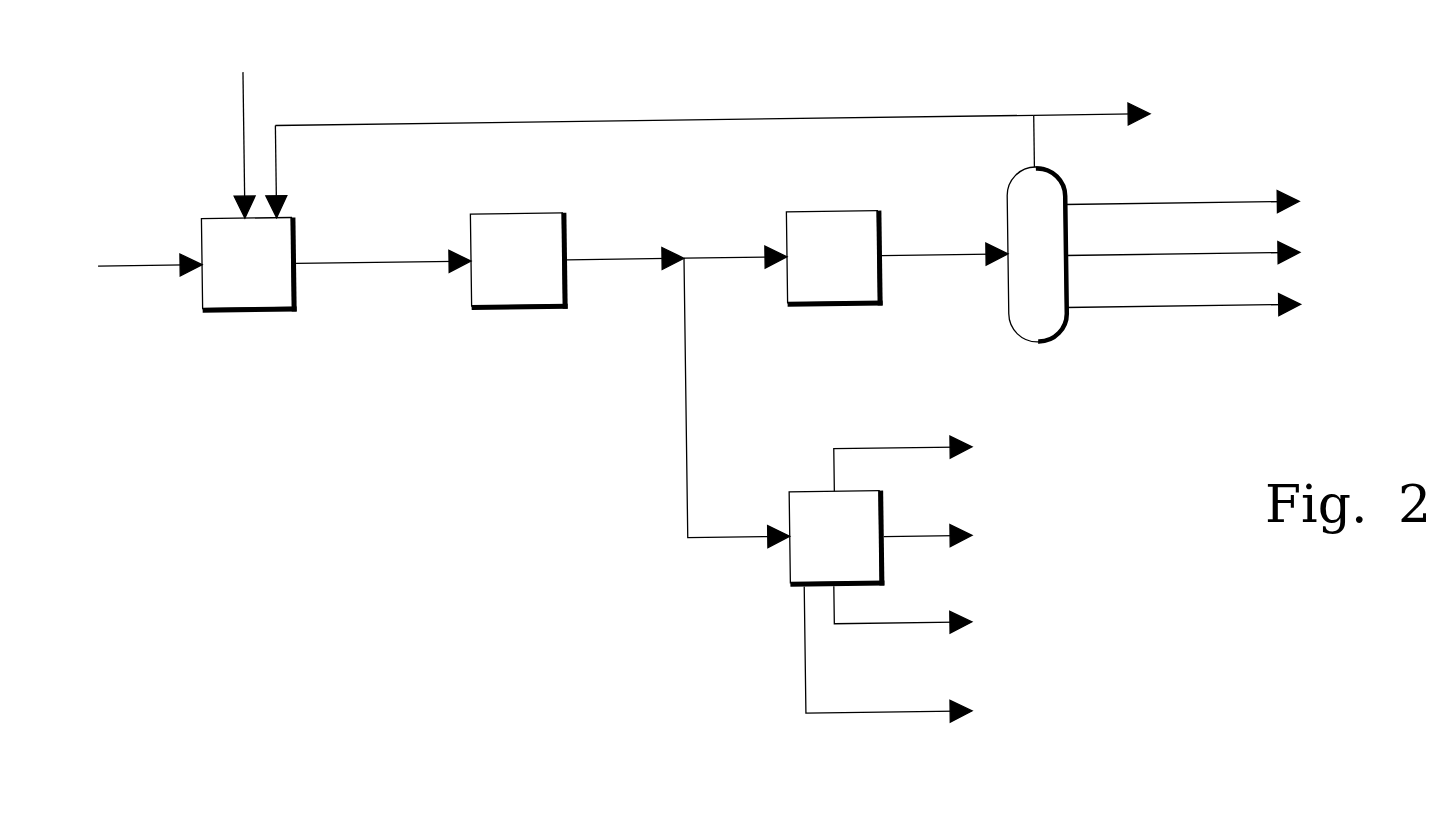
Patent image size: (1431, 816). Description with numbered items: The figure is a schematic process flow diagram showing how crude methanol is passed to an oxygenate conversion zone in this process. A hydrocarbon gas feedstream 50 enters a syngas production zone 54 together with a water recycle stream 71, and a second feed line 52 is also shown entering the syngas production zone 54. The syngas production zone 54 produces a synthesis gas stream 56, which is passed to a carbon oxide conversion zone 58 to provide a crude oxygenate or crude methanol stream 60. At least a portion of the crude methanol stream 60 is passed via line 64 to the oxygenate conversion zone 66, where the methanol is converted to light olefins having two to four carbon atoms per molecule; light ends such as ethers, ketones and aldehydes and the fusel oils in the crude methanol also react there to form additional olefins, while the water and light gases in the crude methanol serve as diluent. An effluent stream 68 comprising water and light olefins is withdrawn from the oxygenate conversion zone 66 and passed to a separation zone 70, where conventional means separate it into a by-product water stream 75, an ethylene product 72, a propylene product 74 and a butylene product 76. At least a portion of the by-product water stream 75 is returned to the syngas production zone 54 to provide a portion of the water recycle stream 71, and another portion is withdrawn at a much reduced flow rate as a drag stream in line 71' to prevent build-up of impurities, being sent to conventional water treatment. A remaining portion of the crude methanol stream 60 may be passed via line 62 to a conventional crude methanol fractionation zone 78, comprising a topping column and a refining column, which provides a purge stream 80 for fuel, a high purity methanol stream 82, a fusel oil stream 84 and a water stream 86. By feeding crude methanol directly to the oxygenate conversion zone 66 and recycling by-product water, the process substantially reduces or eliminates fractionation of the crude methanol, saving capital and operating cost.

The hydrocarbon gas feedstream 50 is at (148, 260).
The additive stream 52 is at (247, 103).
The syngas production zone 54 is at (265, 304).
The synthesis gas stream 56 is at (371, 260).
The carbon oxide conversion zone 58 is at (533, 305).
The crude methanol stream 60 is at (619, 259).
The line 62 is at (684, 396).
The line 64 is at (738, 257).
The oxygenate conversion zone 66 is at (852, 306).
The effluent stream 68 is at (932, 257).
The separation zone 70 is at (1052, 343).
The water recycle stream 71 is at (649, 145).
The drag stream 71' is at (1091, 94).
The ethylene product 72 is at (1165, 209).
The propylene product 74 is at (1165, 260).
The by-product water stream 75 is at (1035, 154).
The butylene product 76 is at (1165, 312).
The crude methanol fractionation zone 78 is at (786, 584).
The purge stream 80 is at (928, 451).
The high purity methanol stream 82 is at (928, 540).
The fusel oil stream 84 is at (926, 626).
The water stream 86 is at (926, 715).